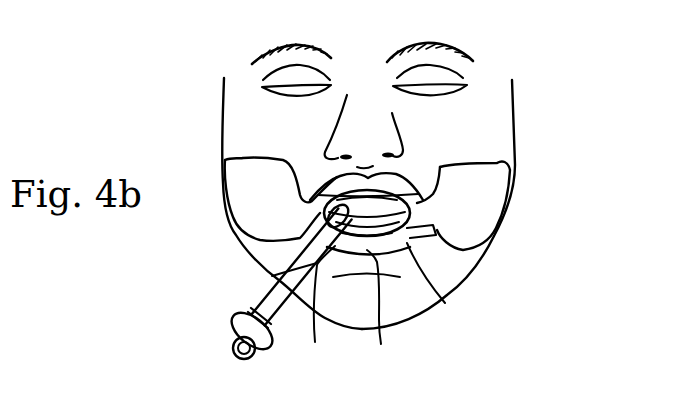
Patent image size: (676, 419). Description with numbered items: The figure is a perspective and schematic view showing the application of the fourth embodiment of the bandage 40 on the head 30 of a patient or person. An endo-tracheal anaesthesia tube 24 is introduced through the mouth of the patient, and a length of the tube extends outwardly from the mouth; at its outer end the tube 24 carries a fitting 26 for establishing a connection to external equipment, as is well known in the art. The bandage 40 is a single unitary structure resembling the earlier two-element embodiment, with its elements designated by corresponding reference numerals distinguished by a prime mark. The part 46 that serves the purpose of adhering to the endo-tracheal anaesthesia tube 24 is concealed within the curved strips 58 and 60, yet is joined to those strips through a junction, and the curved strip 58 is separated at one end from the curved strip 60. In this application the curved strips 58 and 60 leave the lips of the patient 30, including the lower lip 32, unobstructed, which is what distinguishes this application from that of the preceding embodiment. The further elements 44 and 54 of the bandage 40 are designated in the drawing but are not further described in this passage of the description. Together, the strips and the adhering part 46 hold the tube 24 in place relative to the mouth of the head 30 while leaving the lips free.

The head of the patient or person 30 is at (467, 45).
The left cheek pad 44 is at (247, 210).
The right cheek pad 54 is at (480, 215).
The curved strip 60 is at (400, 185).
The endo-tracheal anaesthesia tube 24 is at (264, 298).
The fitting 26 is at (233, 352).
The part adhering to the endo-tracheal anaesthesia tube 46 is at (313, 324).
The curved strip 58 is at (379, 322).
The bandage (fourth embodiment) 40 is at (115, 0).
The lower lip 32 is at (443, 300).